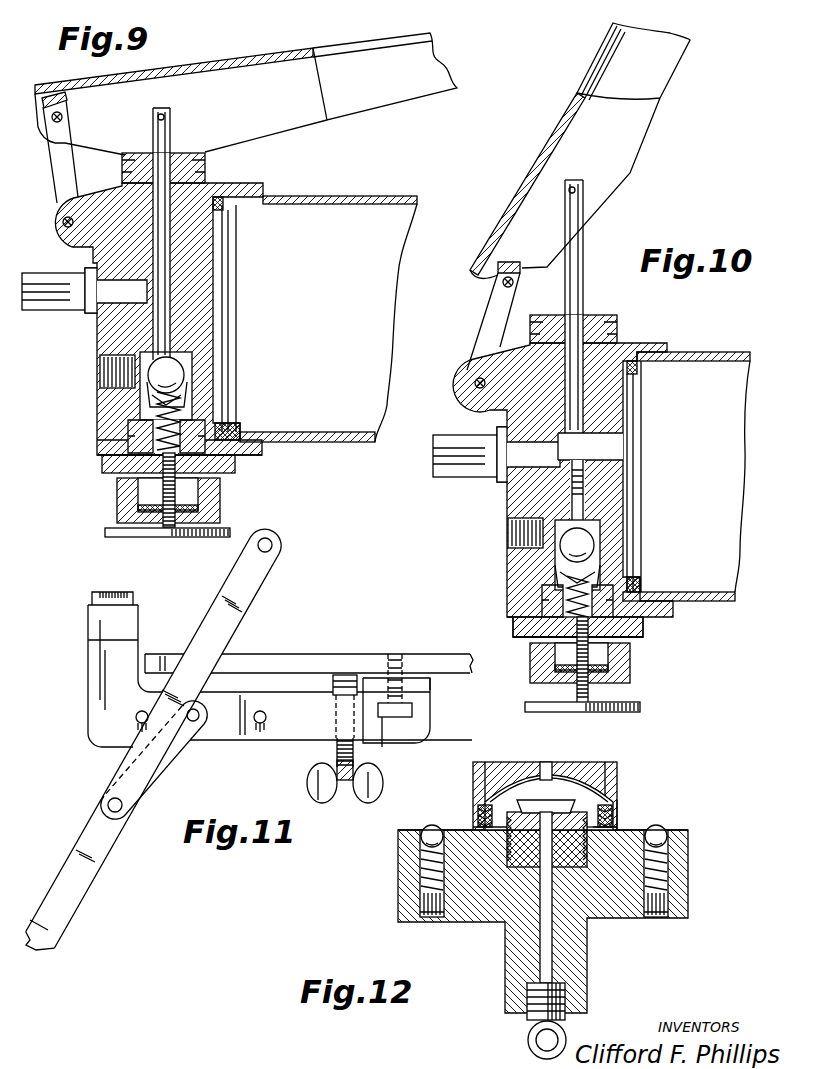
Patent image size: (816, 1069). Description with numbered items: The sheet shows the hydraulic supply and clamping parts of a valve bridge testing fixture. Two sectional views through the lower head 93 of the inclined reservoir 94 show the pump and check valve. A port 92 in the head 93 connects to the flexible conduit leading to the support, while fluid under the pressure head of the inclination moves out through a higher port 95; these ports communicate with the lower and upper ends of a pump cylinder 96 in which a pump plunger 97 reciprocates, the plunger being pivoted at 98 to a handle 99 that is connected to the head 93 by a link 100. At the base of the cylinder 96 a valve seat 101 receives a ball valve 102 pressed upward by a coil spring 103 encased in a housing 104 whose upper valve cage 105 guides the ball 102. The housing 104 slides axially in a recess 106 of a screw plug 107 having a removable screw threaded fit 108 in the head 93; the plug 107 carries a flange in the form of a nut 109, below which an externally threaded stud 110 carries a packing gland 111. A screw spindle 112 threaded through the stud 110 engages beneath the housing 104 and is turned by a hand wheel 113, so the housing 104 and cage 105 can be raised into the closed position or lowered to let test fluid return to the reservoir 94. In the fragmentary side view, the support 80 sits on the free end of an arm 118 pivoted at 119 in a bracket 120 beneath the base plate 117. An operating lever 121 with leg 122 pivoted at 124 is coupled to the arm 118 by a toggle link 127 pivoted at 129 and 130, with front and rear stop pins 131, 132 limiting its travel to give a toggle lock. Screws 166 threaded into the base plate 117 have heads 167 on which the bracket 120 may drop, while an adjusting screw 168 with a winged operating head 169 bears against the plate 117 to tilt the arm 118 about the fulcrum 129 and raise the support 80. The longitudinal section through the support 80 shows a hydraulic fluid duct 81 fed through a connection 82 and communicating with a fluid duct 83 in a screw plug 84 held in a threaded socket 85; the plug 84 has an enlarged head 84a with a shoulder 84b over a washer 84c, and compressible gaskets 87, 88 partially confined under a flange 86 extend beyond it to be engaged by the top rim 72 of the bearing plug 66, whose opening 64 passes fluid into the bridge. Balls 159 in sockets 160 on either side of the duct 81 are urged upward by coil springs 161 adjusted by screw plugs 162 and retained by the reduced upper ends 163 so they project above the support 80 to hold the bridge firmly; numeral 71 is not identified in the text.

In FIG. 9, the handle 99 is at (383, 48).
In FIG. 10, the handle 99 is at (642, 123).
In FIG. 9, the link 100 is at (57, 163).
In FIG. 10, the link 100 is at (492, 310).
In FIG. 9, the lower head 93 is at (103, 328).
In FIG. 10, the lower head 93 is at (510, 402).
In FIG. 9, the inclined reservoir 94 is at (372, 203).
In FIG. 10, the inclined reservoir 94 is at (736, 345).
In FIG. 9, the port 95 is at (203, 282).
In FIG. 10, the port 95 is at (612, 445).
In FIG. 10, the pump cylinder 96 is at (580, 488).
In FIG. 9, the pump plunger 97 is at (167, 322).
In FIG. 10, the pump plunger 97 is at (583, 298).
In FIG. 10, the pivot 98 is at (580, 182).
In FIG. 9, the valve seat 101 is at (200, 355).
In FIG. 10, the valve seat 101 is at (597, 518).
In FIG. 9, the ball valve 102 is at (180, 372).
In FIG. 10, the ball valve 102 is at (588, 540).
In FIG. 9, the coil spring 103 is at (187, 393).
In FIG. 10, the coil spring 103 is at (597, 575).
In FIG. 9, the housing 104 is at (200, 422).
In FIG. 10, the housing 104 is at (628, 587).
In FIG. 10, the valve cage 105 is at (553, 567).
In FIG. 9, the recess 106 is at (237, 457).
In FIG. 10, the recess 106 is at (633, 476).
In FIG. 9, the screw plug 107 is at (133, 438).
In FIG. 10, the screw plug 107 is at (533, 635).
In FIG. 9, the screw threaded fit 108 is at (147, 423).
In FIG. 10, the screw threaded fit 108 is at (540, 600).
In FIG. 9, the nut 109 is at (103, 470).
In FIG. 10, the nut 109 is at (643, 627).
In FIG. 9, the externally threaded stud 110 is at (135, 497).
In FIG. 9, the packing gland 111 is at (220, 495).
In FIG. 10, the packing gland 111 is at (630, 663).
In FIG. 9, the screw spindle 112 is at (173, 527).
In FIG. 10, the screw spindle 112 is at (587, 695).
In FIG. 9, the hand wheel 113 is at (148, 537).
In FIG. 10, the hand wheel 113 is at (640, 707).
In FIG. 9, the port 92 is at (132, 370).
In FIG. 10, the port 92 is at (547, 532).
In FIG. 11, the support 80 is at (98, 628).
In FIG. 12, the support 80 is at (628, 910).
In FIG. 11, the base plate 117 is at (327, 663).
In FIG. 11, the arm 118 is at (250, 730).
In FIG. 11, the pivot 119 is at (407, 727).
In FIG. 11, the bracket 120 is at (428, 687).
In FIG. 11, the operating lever 121 is at (62, 923).
In FIG. 11, the leg 122 is at (225, 625).
In FIG. 11, the pivot 124 is at (273, 543).
In FIG. 11, the toggle link 127 is at (168, 748).
In FIG. 11, the pivot 129 is at (200, 710).
In FIG. 11, the pivot 130 is at (108, 805).
In FIG. 11, the front stop pin 131 is at (135, 722).
In FIG. 11, the rear stop pin 132 is at (263, 717).
In FIG. 11, the screw 166 is at (413, 698).
In FIG. 11, the head 167 is at (383, 720).
In FIG. 11, the adjusting screw 168 is at (335, 748).
In FIG. 11, the winged operating head 169 is at (370, 790).
In FIG. 12, the opening 64 is at (547, 767).
In FIG. 12, the bearing plug 66 is at (613, 762).
In FIG. 12, the spring bore 71 is at (430, 827).
In FIG. 12, the top rim 72 is at (587, 823).
In FIG. 12, the hydraulic fluid duct 81 is at (543, 935).
In FIG. 12, the connection 82 is at (543, 1017).
In FIG. 12, the fluid duct 83 is at (605, 800).
In FIG. 12, the screw plug 84 is at (472, 920).
In FIG. 12, the enlarged head 84a is at (518, 763).
In FIG. 12, the shoulder 84b is at (517, 835).
In FIG. 12, the washer 84c is at (640, 812).
In FIG. 12, the threaded socket 85 is at (615, 827).
In FIG. 12, the flange 86 is at (488, 767).
In FIG. 12, the compressible gasket 87 is at (478, 812).
In FIG. 12, the compressible gasket 88 is at (475, 827).
In FIG. 12, the ball 159 is at (423, 840).
In FIG. 12, the socket 160 is at (667, 865).
In FIG. 12, the coil spring 161 is at (668, 875).
In FIG. 12, the screw plug 162 is at (648, 917).
In FIG. 12, the upper end 163 is at (667, 828).